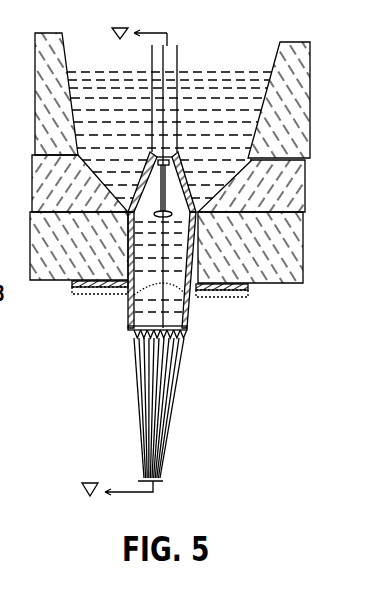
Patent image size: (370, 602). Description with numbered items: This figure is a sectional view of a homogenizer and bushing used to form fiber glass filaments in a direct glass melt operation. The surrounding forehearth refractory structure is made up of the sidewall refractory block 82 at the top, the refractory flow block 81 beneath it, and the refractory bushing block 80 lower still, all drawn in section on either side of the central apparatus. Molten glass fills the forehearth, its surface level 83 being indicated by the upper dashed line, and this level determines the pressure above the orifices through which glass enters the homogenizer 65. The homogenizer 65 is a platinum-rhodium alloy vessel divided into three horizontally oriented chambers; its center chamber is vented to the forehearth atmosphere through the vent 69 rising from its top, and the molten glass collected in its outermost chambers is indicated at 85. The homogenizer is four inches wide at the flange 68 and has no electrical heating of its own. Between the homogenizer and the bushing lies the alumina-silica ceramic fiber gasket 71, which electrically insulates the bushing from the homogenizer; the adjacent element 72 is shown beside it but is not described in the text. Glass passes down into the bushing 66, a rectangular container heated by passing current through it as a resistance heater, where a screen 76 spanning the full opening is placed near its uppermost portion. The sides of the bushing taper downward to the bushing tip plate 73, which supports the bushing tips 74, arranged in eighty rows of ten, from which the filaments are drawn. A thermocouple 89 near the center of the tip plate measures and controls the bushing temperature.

The sidewall refractory block 82 is at (36, 50).
The refractory flow block 81 is at (32, 196).
The refractory bushing block 80 is at (30, 247).
The surface level of the molten glass in the forehearth 83 is at (220, 72).
The vent 69 is at (178, 48).
The homogenizer 65 is at (200, 185).
The outermost chambers of the homogenizer 85 is at (169, 186).
The screen 76 is at (165, 285).
The gasket 71 is at (72, 284).
The mounting plate 72 is at (100, 294).
The flange 68 is at (249, 291).
The thermocouple 89 is at (120, 325).
The bushing 66 is at (201, 320).
The bushing tip plate 73 is at (130, 333).
The bushing tips 74 is at (188, 336).